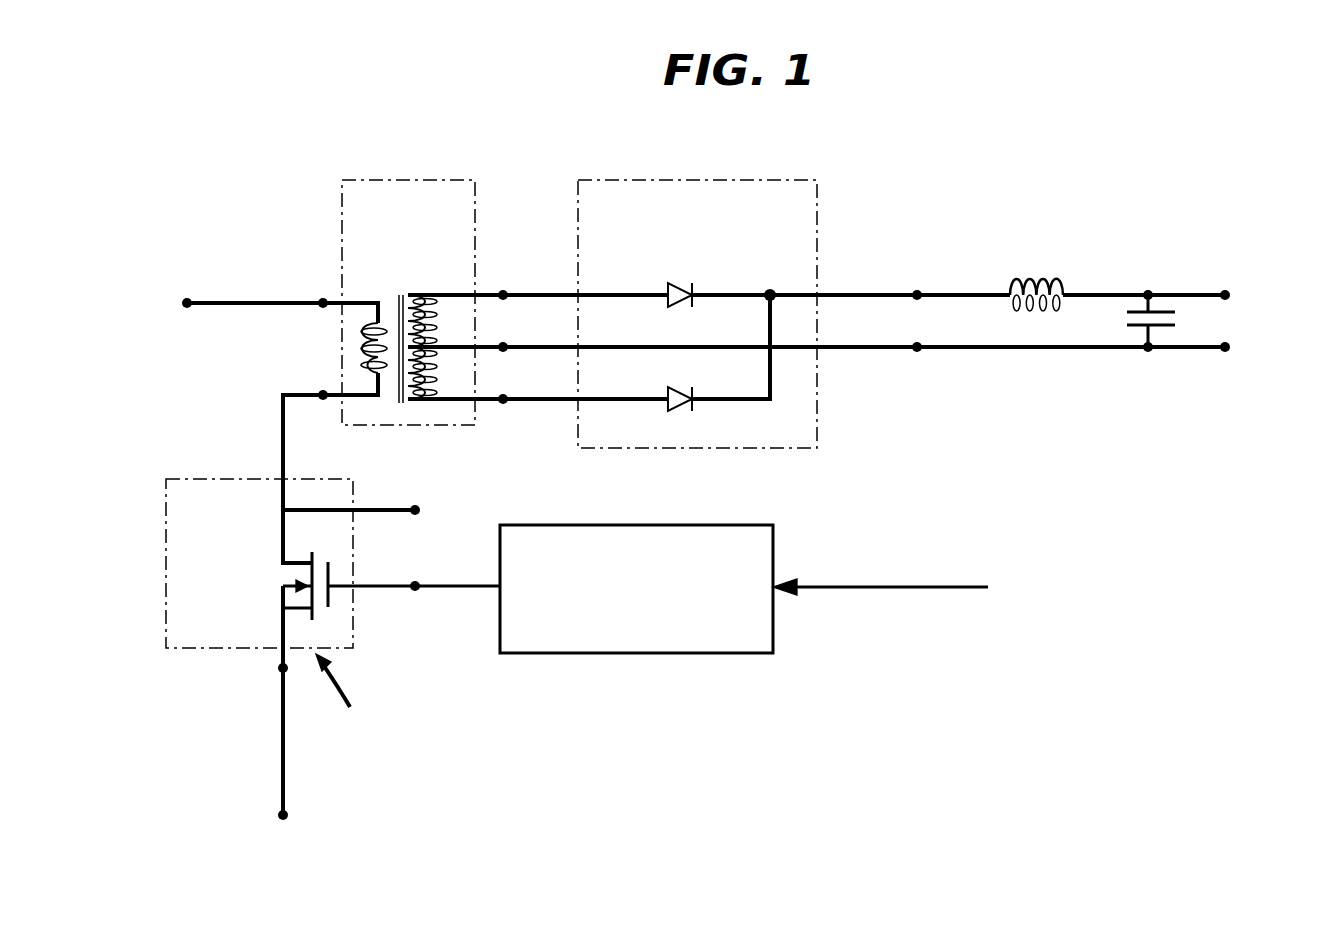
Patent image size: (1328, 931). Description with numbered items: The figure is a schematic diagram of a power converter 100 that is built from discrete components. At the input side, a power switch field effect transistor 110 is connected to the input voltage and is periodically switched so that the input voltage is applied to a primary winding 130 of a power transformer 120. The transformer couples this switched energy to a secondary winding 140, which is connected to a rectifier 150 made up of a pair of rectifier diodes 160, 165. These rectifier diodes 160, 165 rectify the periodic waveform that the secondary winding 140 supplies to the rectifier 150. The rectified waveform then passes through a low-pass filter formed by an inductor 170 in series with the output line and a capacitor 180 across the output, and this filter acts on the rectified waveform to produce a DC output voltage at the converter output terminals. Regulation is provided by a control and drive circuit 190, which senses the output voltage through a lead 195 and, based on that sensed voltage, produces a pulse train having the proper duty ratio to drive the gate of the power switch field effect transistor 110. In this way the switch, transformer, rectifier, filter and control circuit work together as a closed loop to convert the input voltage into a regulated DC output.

The power converter 100 is at (1201, 177).
The power switch field effect transistor 110 is at (166, 572).
The power transformer 120 is at (342, 237).
The primary winding 130 is at (360, 355).
The secondary winding 140 is at (430, 406).
The rectifier 150 is at (817, 225).
The rectifier diode 160 is at (668, 290).
The rectifier diode 165 is at (668, 404).
The inductor 170 is at (1065, 291).
The capacitor 180 is at (1165, 328).
The control and drive circuit 190 is at (657, 653).
The lead 195 is at (885, 587).